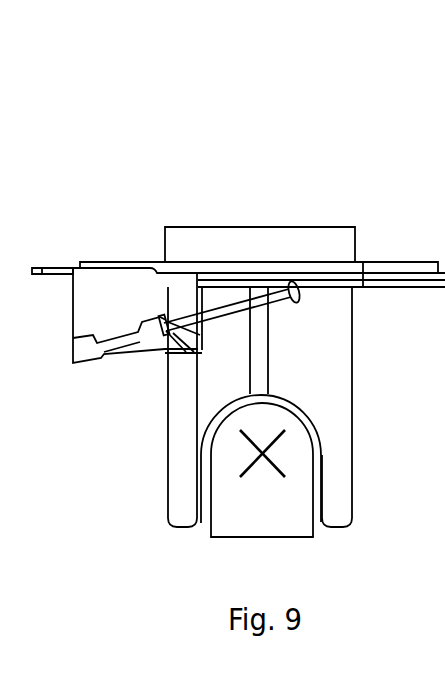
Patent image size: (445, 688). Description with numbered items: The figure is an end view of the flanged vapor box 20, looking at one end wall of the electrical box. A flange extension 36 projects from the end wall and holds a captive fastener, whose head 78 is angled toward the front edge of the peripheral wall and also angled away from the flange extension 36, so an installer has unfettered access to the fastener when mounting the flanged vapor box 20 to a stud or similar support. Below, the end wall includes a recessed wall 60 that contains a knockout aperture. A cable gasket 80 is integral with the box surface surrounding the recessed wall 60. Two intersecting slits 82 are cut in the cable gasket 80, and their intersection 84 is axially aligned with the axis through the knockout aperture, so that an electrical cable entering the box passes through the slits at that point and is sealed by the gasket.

The flanged vapor box 20 is at (82, 160).
The flange extension 36 is at (109, 310).
The recessed wall 60 is at (320, 522).
The head 78 is at (298, 303).
The cable gasket 80 is at (251, 519).
The intersecting slits 82 is at (276, 442).
The intersection 84 is at (262, 453).